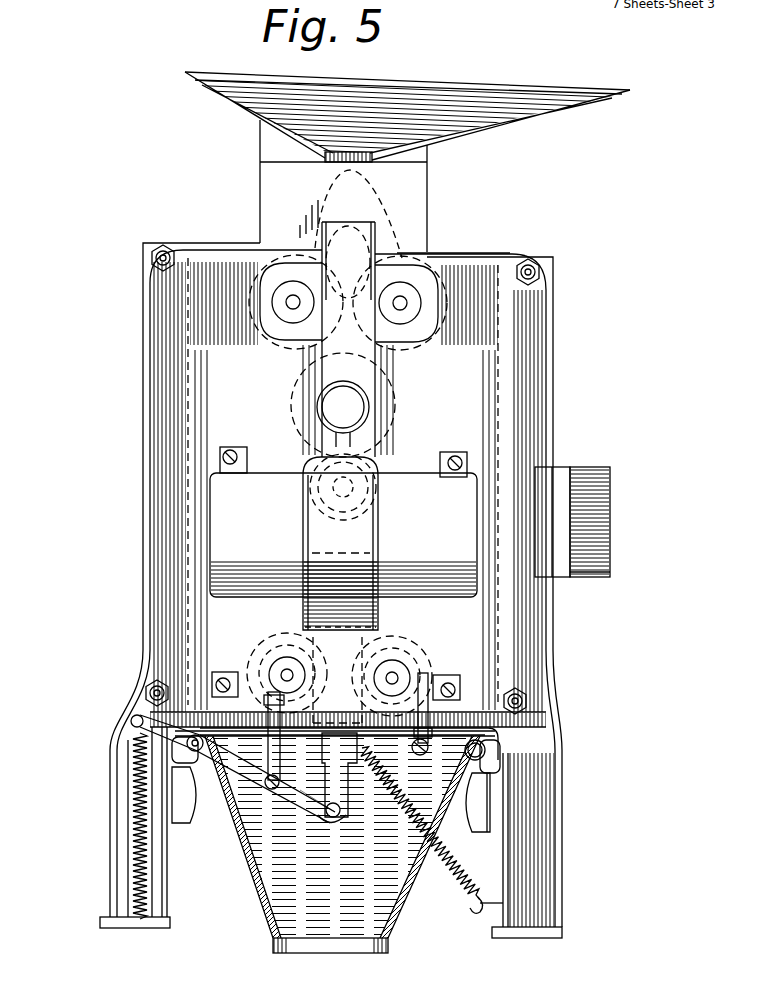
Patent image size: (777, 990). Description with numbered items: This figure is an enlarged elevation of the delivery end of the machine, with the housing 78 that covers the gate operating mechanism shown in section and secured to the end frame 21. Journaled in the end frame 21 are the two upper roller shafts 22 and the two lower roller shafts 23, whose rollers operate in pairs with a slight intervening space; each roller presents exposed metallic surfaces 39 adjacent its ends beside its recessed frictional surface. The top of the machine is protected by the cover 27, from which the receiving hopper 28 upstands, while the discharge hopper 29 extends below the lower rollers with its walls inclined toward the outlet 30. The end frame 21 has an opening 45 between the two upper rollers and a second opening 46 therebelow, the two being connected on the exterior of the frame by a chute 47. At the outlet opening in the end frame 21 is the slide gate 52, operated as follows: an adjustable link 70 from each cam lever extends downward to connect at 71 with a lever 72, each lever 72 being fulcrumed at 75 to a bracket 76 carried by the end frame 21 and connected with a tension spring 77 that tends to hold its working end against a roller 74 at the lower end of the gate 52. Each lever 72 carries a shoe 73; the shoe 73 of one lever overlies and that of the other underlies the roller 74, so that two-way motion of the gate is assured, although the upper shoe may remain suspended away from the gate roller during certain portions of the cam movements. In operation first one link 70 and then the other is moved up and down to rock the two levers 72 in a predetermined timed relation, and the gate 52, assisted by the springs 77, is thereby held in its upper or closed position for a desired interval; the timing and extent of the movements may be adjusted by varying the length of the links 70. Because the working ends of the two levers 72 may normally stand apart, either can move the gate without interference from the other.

The end frame 21 is at (554, 413).
The upper roller shafts 22 is at (290, 306).
The lower roller shafts 23 is at (287, 672).
The cover 27 is at (413, 185).
The receiving hopper 28 is at (557, 87).
The discharge hopper 29 is at (283, 865).
The outlet 30 is at (340, 955).
The exposed metallic surfaces 39 is at (248, 309).
The opening 45 is at (312, 218).
The opening 46 is at (315, 405).
The chute 47 is at (380, 368).
The slide gate 52 is at (328, 792).
The adjustable link 70 is at (490, 722).
The connection 71 is at (272, 793).
The lever 72 is at (245, 772).
The shoe 73 is at (345, 873).
The roller 74 is at (330, 818).
The fulcrum 75 is at (178, 745).
The bracket 76 is at (178, 785).
The tension spring 77 is at (135, 830).
The housing 78 is at (318, 546).